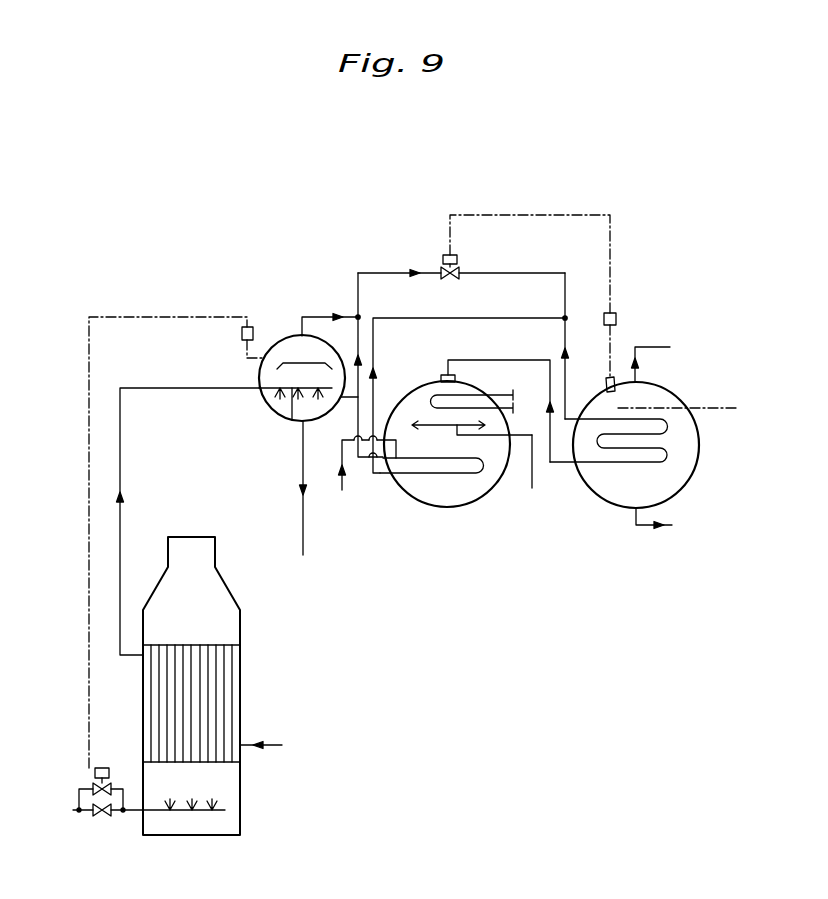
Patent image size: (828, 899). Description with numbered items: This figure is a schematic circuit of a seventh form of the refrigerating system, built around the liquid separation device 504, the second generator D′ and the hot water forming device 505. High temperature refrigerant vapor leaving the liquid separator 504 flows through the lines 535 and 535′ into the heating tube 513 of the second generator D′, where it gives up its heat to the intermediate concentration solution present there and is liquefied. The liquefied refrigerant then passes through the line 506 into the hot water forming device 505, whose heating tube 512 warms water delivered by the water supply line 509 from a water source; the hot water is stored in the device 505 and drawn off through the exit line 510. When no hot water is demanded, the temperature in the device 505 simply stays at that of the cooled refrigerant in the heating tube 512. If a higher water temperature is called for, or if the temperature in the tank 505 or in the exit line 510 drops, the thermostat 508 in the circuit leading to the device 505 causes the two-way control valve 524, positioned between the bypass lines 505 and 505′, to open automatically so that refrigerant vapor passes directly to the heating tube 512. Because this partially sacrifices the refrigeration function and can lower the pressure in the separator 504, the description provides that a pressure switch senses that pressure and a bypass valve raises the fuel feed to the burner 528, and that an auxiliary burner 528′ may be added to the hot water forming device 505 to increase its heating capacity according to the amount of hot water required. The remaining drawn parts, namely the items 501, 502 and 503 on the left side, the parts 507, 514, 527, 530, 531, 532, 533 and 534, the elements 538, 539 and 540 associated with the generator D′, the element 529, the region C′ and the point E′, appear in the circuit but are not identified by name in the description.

The control valve 501 is at (106, 768).
The bypass valve 502 is at (102, 816).
The level controller 503 is at (242, 334).
The liquid separation device 504 is at (283, 336).
The hot water forming device 505 is at (529, 313).
The bypass line 505' is at (553, 327).
The line 506 is at (463, 318).
The line 507 is at (533, 360).
The thermostat 508 is at (617, 315).
The water supply line 509 is at (650, 528).
The exit line 510 is at (655, 347).
The heating tube 512 is at (668, 428).
The heating tube 513 is at (420, 462).
The line 514 is at (534, 475).
The two-way control valve 524 is at (457, 255).
The inlet line 527 is at (282, 745).
The burner 528 is at (188, 835).
The auxiliary burner 528' is at (690, 383).
The tube bundle 529 is at (232, 688).
The liquid line 530 is at (123, 528).
The spray header 531 is at (292, 420).
The drain line 532 is at (303, 555).
The line 533 is at (342, 490).
The distributor 534 is at (308, 363).
The line 535 is at (342, 345).
The line 535' is at (333, 421).
The pressure regulator 538 is at (485, 348).
The coil 539 is at (473, 395).
The distributor 540 is at (442, 421).
The column C' is at (210, 686).
The second generator D' is at (447, 466).
The vessel inlet E' is at (415, 375).